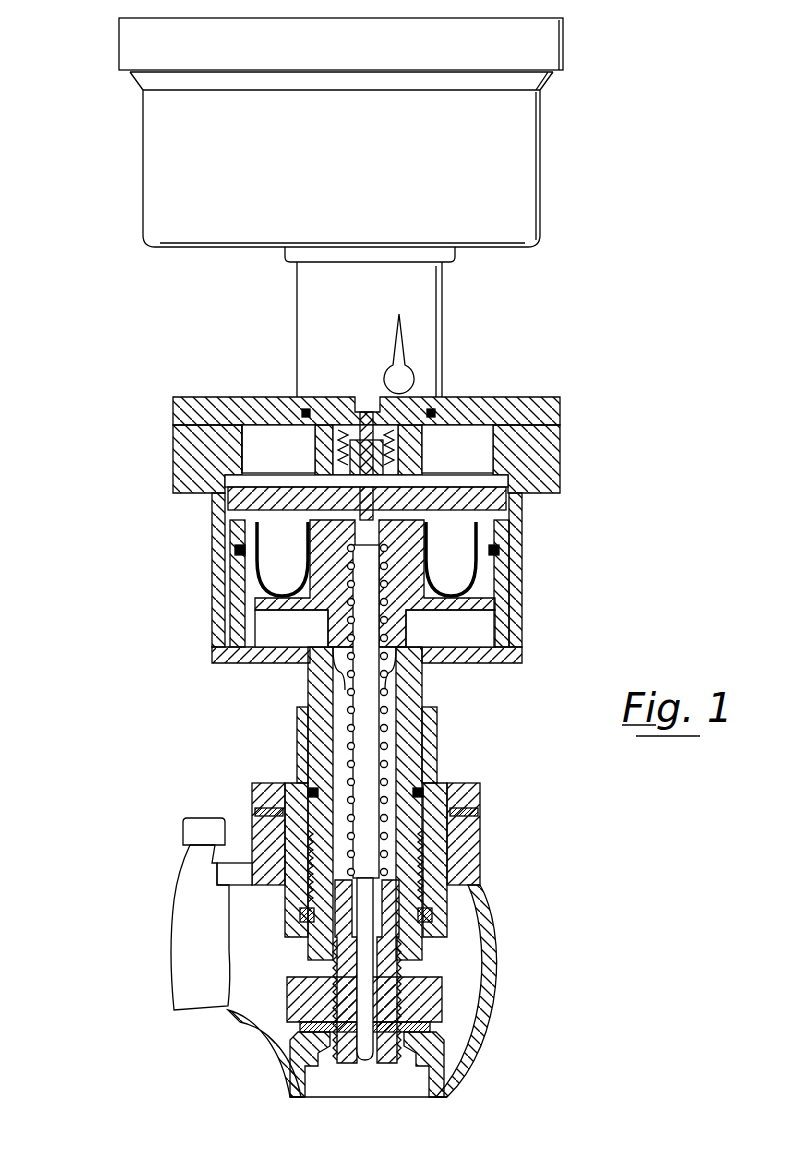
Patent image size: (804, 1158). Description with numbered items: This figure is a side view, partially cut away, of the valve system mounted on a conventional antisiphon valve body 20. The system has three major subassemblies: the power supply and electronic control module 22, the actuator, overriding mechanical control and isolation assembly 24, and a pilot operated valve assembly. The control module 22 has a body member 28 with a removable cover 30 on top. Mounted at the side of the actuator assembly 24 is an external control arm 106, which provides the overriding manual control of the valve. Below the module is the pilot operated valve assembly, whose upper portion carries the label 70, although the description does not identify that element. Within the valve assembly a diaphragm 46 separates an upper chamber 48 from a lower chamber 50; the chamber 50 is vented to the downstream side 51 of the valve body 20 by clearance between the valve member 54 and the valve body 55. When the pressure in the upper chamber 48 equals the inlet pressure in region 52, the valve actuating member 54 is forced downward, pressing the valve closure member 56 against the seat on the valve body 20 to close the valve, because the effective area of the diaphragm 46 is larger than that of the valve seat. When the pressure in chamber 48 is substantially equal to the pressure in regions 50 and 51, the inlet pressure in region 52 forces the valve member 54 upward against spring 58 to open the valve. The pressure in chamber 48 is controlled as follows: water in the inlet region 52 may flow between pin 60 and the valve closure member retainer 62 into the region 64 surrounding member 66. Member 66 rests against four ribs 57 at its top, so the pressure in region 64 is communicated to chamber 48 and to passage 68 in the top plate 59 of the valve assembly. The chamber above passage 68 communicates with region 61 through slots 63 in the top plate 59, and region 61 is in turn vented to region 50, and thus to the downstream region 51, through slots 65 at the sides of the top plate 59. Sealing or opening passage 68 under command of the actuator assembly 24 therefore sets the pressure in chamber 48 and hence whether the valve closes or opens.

The antisiphon valve body 20 is at (495, 962).
The power supply and electronic control module 22 is at (548, 140).
The actuator, overriding mechanical control and isolation assembly 24 is at (444, 300).
The body member 28 is at (143, 137).
The removable cover 30 is at (128, 18).
The diaphragm 46 is at (262, 580).
The upper chamber 48 is at (270, 518).
The lower chamber 50 is at (265, 630).
The downstream side 51 is at (260, 995).
The inlet region 52 is at (408, 1085).
The valve actuating member 54 is at (342, 710).
The valve body 55 is at (412, 728).
The valve closure member 56 is at (318, 1058).
The ribs 57 is at (300, 498).
The spring 58 is at (386, 703).
The top plate 59 is at (505, 488).
The pin 60 is at (364, 1063).
The region 61 is at (246, 443).
The valve closure member retainer 62 is at (345, 1065).
The slots 63 is at (248, 427).
The region 64 is at (353, 740).
The slots 65 is at (230, 548).
The member 66 is at (370, 772).
The passage 68 is at (396, 460).
The top block 70 is at (275, 410).
The external control arm 106 is at (401, 350).